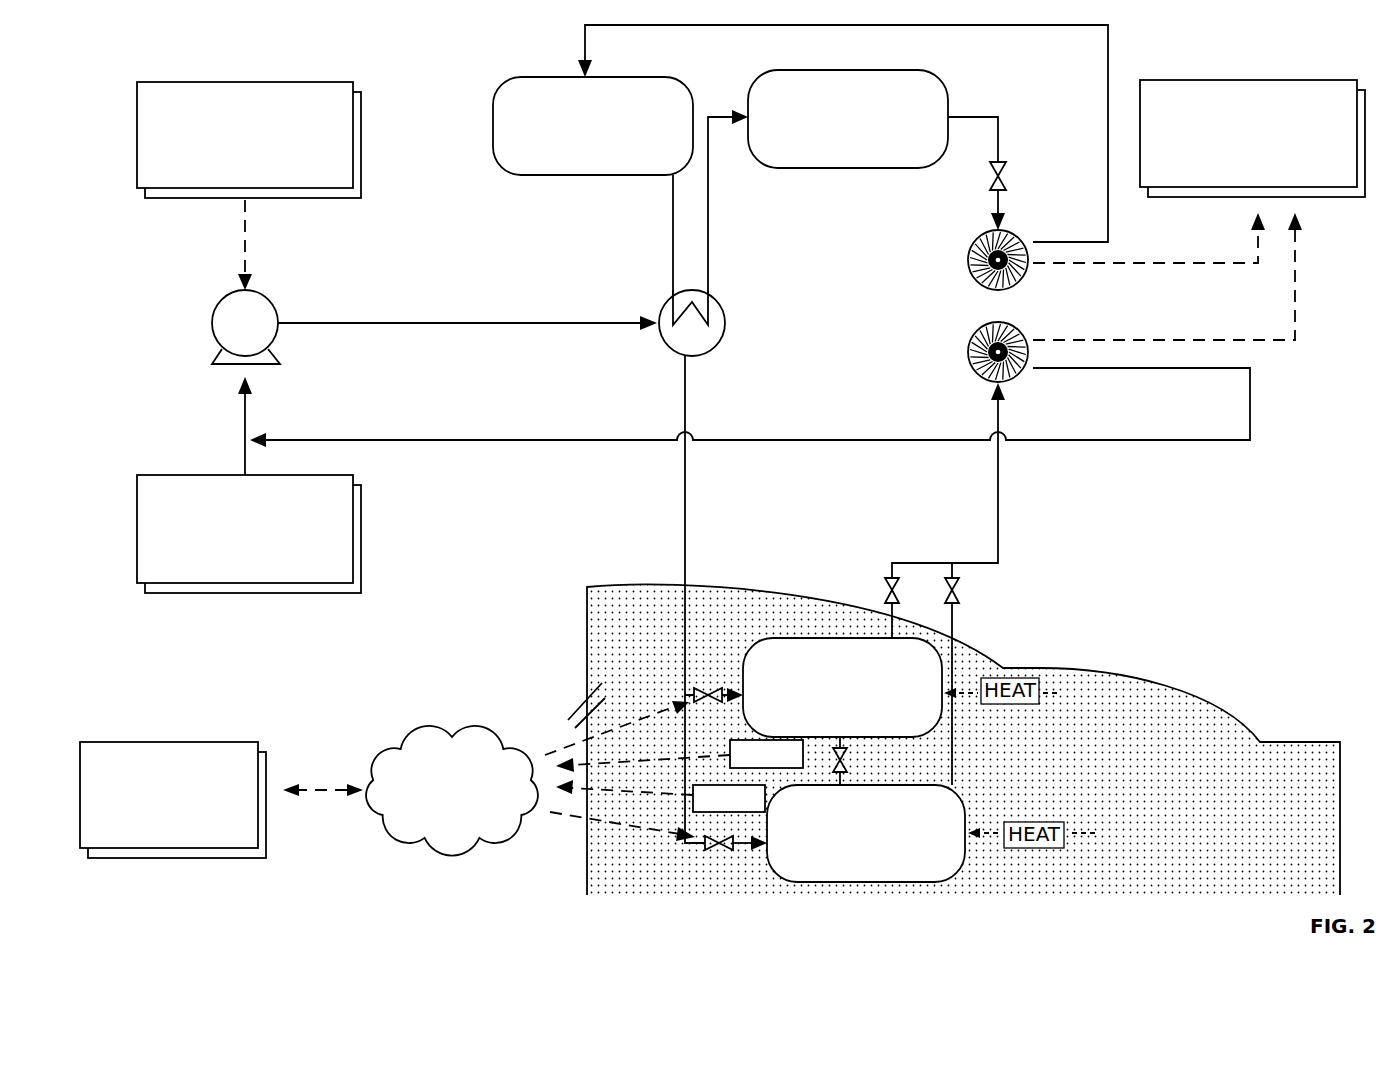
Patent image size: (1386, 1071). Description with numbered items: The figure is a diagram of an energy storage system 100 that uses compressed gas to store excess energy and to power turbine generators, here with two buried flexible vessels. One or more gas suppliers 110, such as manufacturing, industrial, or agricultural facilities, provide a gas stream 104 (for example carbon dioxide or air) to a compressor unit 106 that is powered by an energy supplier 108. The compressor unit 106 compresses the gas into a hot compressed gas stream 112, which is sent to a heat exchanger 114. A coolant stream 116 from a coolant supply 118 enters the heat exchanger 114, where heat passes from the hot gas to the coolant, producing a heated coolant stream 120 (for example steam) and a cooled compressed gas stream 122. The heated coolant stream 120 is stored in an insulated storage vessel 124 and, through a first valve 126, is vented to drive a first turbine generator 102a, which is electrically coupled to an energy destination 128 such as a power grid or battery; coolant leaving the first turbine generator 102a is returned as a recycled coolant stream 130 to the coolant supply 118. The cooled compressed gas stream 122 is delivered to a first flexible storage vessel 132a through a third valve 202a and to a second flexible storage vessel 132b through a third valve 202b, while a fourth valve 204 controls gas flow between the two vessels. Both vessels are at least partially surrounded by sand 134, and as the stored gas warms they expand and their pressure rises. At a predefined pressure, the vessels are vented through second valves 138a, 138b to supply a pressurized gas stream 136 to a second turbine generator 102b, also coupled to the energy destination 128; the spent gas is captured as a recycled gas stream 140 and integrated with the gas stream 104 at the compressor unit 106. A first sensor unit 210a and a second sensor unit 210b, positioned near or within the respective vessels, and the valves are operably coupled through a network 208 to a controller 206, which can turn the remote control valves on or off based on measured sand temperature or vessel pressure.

The energy storage system 100 is at (1292, 54).
The first turbine generator 102a is at (968, 252).
The second turbine generator 102b is at (968, 345).
The gas stream 104 is at (245, 422).
The compressor unit 106 is at (246, 282).
The energy supplier 108 is at (249, 140).
The gas supplier 110 is at (249, 534).
The hot compressed gas stream 112 is at (412, 322).
The heat exchanger 114 is at (725, 318).
The coolant stream 116 is at (673, 245).
The coolant supply 118 is at (593, 126).
The heated coolant stream 120 is at (708, 250).
The cooled compressed gas stream 122 is at (685, 405).
The insulated storage vessel 124 is at (848, 119).
The first valve 126 is at (1005, 164).
The energy destination 128 is at (1252, 138).
The recycled coolant stream 130 is at (1108, 105).
The first flexible storage vessel 132a is at (842, 687).
The second flexible storage vessel 132b is at (866, 833).
The sand 134 is at (963, 739).
The pressurized gas stream 136 is at (998, 515).
The second valve 138a is at (884, 580).
The second valve 138b is at (960, 590).
The recycled gas stream 140 is at (1250, 418).
The third valve 202a is at (703, 689).
The third valve 202b is at (706, 848).
The fourth valve 204 is at (850, 757).
The controller 206 is at (173, 800).
The network 208 is at (452, 791).
The first sensor unit 210a is at (679, 756).
The second sensor unit 210b is at (660, 796).